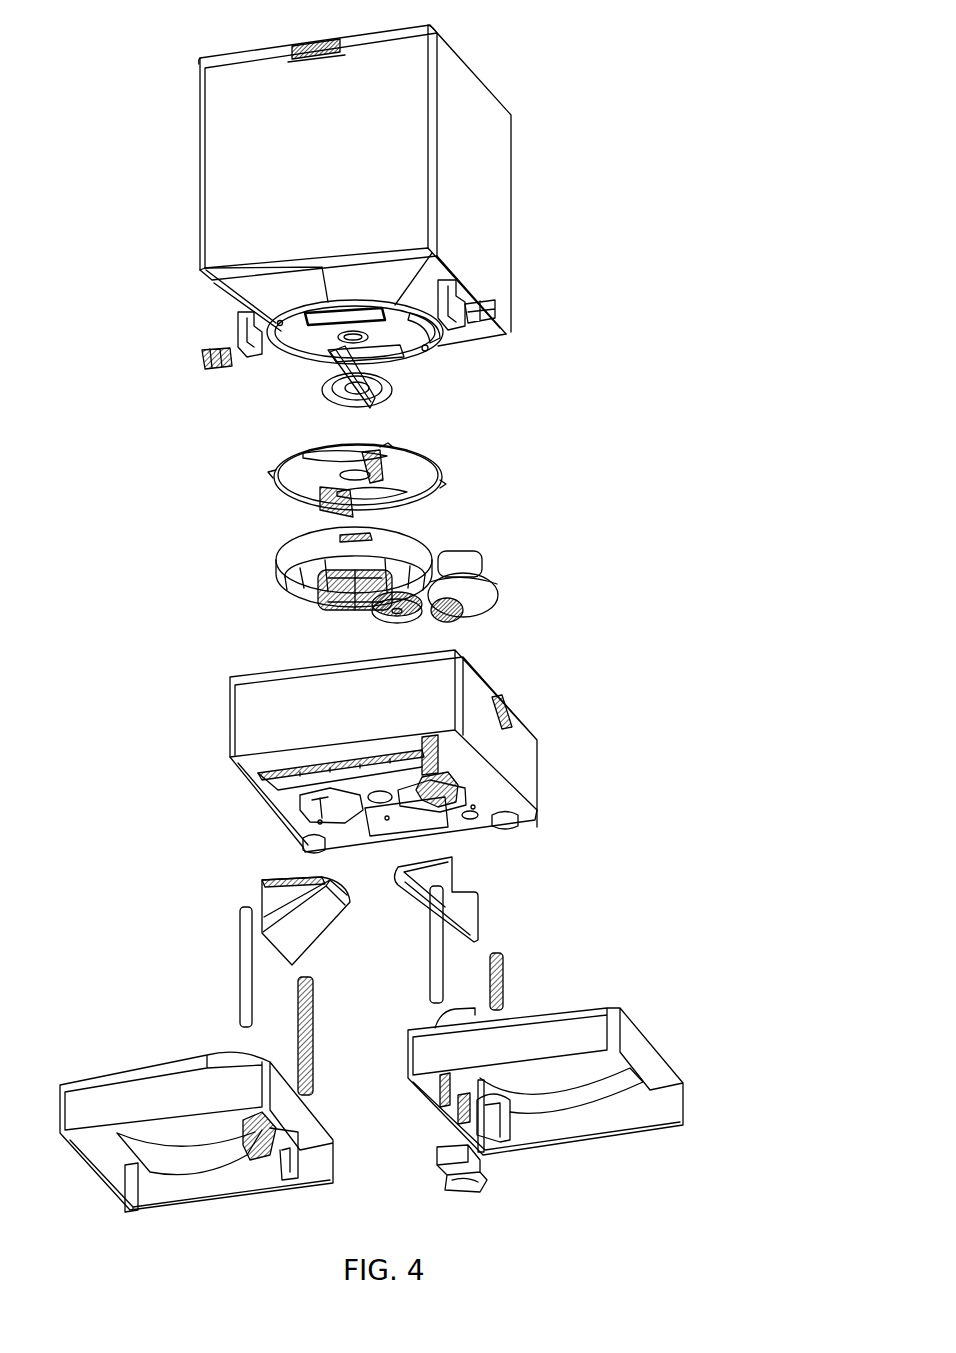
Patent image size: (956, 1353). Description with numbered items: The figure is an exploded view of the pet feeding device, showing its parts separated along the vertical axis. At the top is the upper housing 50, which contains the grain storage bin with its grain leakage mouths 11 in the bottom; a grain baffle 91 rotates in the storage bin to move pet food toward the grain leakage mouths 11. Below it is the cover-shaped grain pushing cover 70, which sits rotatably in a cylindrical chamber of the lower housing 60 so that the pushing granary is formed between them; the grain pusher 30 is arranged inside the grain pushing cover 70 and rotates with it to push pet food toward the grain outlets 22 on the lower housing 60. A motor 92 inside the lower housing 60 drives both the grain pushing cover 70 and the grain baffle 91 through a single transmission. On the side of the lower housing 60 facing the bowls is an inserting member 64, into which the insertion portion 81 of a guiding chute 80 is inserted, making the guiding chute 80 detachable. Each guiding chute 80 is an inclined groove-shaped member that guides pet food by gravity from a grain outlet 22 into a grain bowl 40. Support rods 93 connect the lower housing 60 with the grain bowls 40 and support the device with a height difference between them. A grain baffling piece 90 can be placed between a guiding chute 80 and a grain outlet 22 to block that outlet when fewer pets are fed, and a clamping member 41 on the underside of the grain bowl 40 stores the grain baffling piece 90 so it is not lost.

The upper housing 50 is at (370, 155).
The grain leakage mouth 11 is at (363, 355).
The grain baffle 91 is at (332, 368).
The grain pushing cover 70 is at (298, 553).
The grain pusher 30 is at (285, 586).
The motor 92 is at (488, 577).
The lower housing 60 is at (425, 697).
The grain outlet 22 is at (438, 787).
The inserting member 64 is at (470, 800).
The insertion portion 81 is at (452, 858).
The guiding chute 80 is at (437, 880).
The support rod 93 is at (243, 980).
The grain bowl 40 is at (548, 1037).
The clamping member 41 is at (483, 1077).
The grain baffling piece 90 is at (470, 1166).